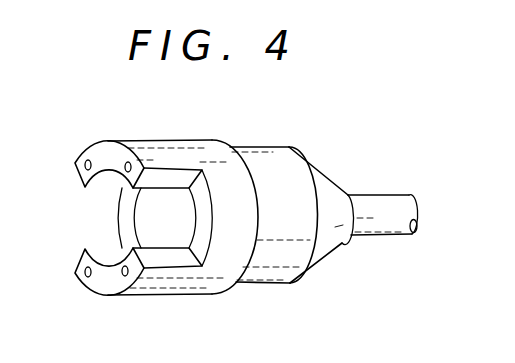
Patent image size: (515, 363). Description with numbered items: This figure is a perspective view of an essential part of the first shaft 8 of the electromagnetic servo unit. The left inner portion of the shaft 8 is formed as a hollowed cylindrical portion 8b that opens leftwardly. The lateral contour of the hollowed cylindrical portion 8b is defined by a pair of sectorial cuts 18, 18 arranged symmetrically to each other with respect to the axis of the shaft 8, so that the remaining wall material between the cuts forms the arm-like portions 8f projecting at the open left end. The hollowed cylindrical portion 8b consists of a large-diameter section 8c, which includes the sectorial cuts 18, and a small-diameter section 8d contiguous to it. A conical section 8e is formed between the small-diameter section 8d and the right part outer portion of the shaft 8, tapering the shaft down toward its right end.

The first shaft 8 is at (241, 131).
The hollowed cylindrical portion 8b is at (262, 135).
The large-diameter section 8c is at (175, 143).
The small-diameter section 8d is at (274, 268).
The conical section 8e is at (336, 236).
The arms 8f is at (107, 148).
The sectorial cuts 18 is at (80, 178).